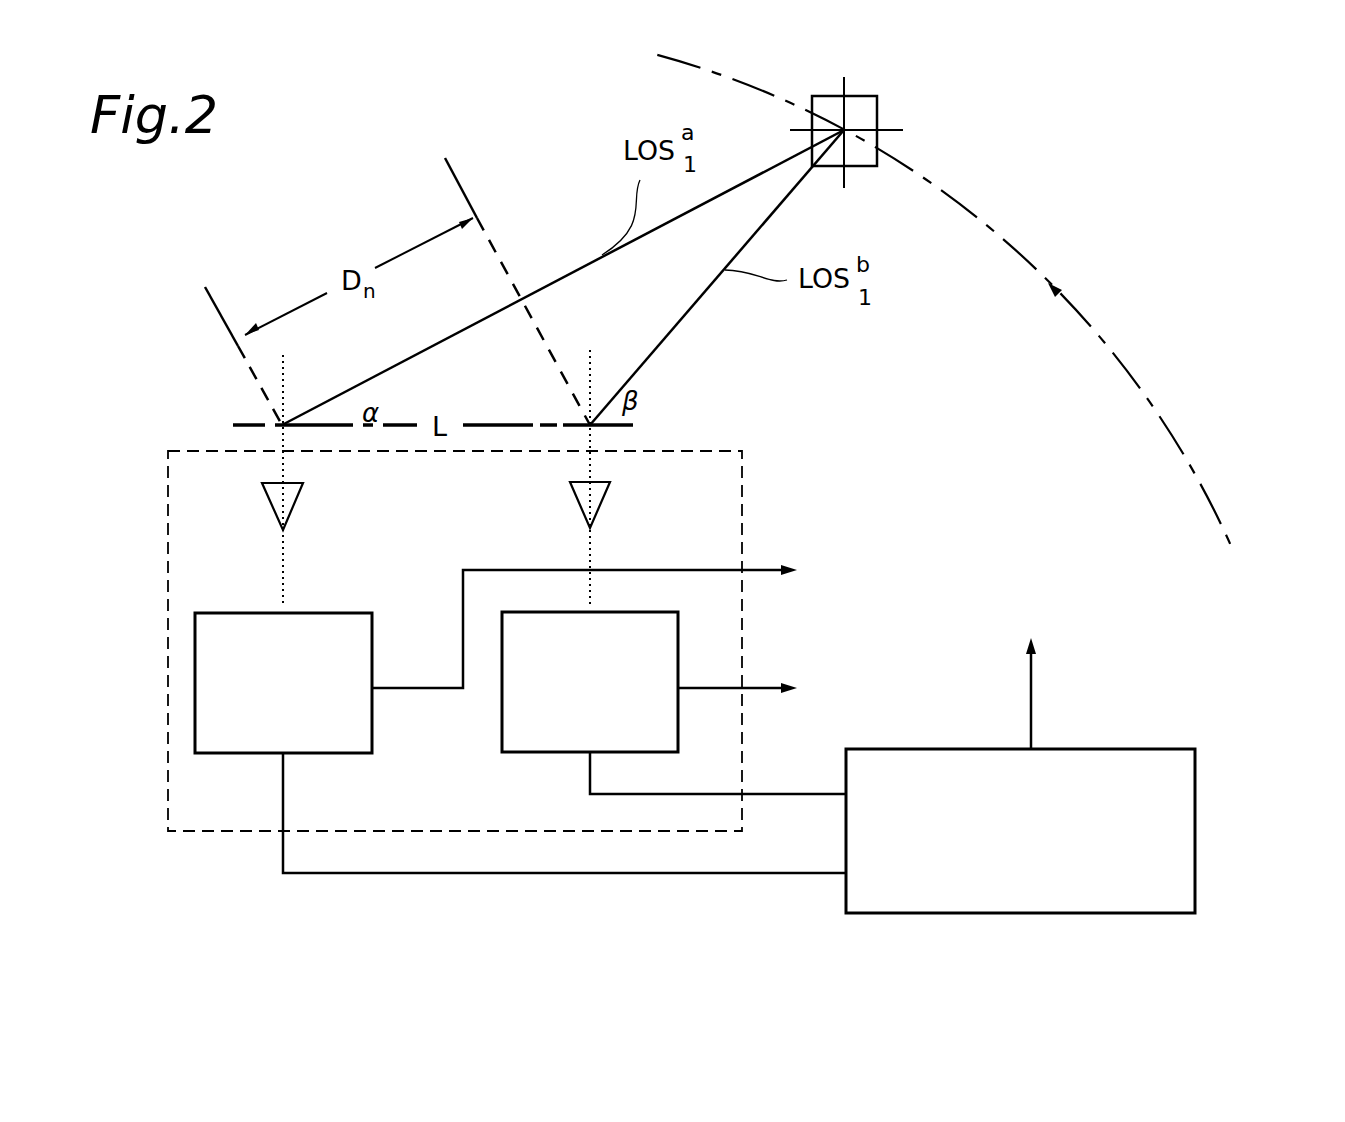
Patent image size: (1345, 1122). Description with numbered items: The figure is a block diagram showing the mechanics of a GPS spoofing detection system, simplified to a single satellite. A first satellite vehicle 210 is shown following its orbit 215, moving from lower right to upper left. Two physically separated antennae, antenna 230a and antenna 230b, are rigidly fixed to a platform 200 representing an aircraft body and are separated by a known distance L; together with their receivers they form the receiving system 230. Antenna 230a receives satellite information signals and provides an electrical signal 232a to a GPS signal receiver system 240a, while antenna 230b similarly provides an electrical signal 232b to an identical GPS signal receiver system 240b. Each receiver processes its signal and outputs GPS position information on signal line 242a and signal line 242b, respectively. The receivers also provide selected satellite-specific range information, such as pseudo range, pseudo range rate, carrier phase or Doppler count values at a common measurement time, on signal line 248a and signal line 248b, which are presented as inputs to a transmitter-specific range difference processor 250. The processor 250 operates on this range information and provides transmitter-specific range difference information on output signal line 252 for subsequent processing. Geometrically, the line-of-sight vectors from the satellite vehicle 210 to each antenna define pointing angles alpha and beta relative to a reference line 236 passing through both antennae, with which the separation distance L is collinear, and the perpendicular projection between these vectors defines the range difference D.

The platform 200 is at (255, 423).
The first satellite vehicle 210 is at (878, 118).
The orbit 215 is at (1098, 327).
The receiving system 230 is at (742, 466).
The antenna 230a is at (292, 512).
The second antenna 230b is at (600, 505).
The electrical signal 232a is at (283, 583).
The electrical signal 232b is at (590, 550).
The reference line 236 is at (648, 416).
The GPS signal receiver system 240a is at (372, 637).
The GPS signal receiver system 240b is at (707, 607).
The signal line 242a is at (758, 568).
The signal line 242b is at (758, 688).
The signal line 248a is at (283, 793).
The signal line 248b is at (590, 777).
The transmitter-specific range difference processor 250 is at (1197, 790).
The output signal line 252 is at (1033, 680).